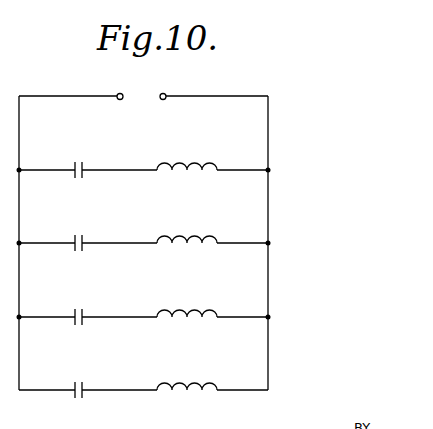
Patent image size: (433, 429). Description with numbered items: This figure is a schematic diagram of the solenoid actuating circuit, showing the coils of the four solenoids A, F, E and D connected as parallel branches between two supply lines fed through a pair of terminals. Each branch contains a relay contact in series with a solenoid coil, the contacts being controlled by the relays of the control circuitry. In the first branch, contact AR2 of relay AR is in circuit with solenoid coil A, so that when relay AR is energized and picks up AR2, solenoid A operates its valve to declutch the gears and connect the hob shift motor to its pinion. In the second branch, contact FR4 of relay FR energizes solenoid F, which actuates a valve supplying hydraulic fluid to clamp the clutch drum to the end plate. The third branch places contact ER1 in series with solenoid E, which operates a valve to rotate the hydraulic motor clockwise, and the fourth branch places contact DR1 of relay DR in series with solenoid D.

The contact AR2 of relay AR AR2 is at (76, 159).
The contact FR4 of relay FR FR4 is at (77, 233).
The contact ER1 of relay ER ER1 is at (80, 306).
The contact DR1 of relay DR DR1 is at (83, 380).
The solenoid A is at (215, 163).
The solenoid F is at (209, 236).
The solenoid E is at (210, 310).
The solenoid D is at (208, 384).